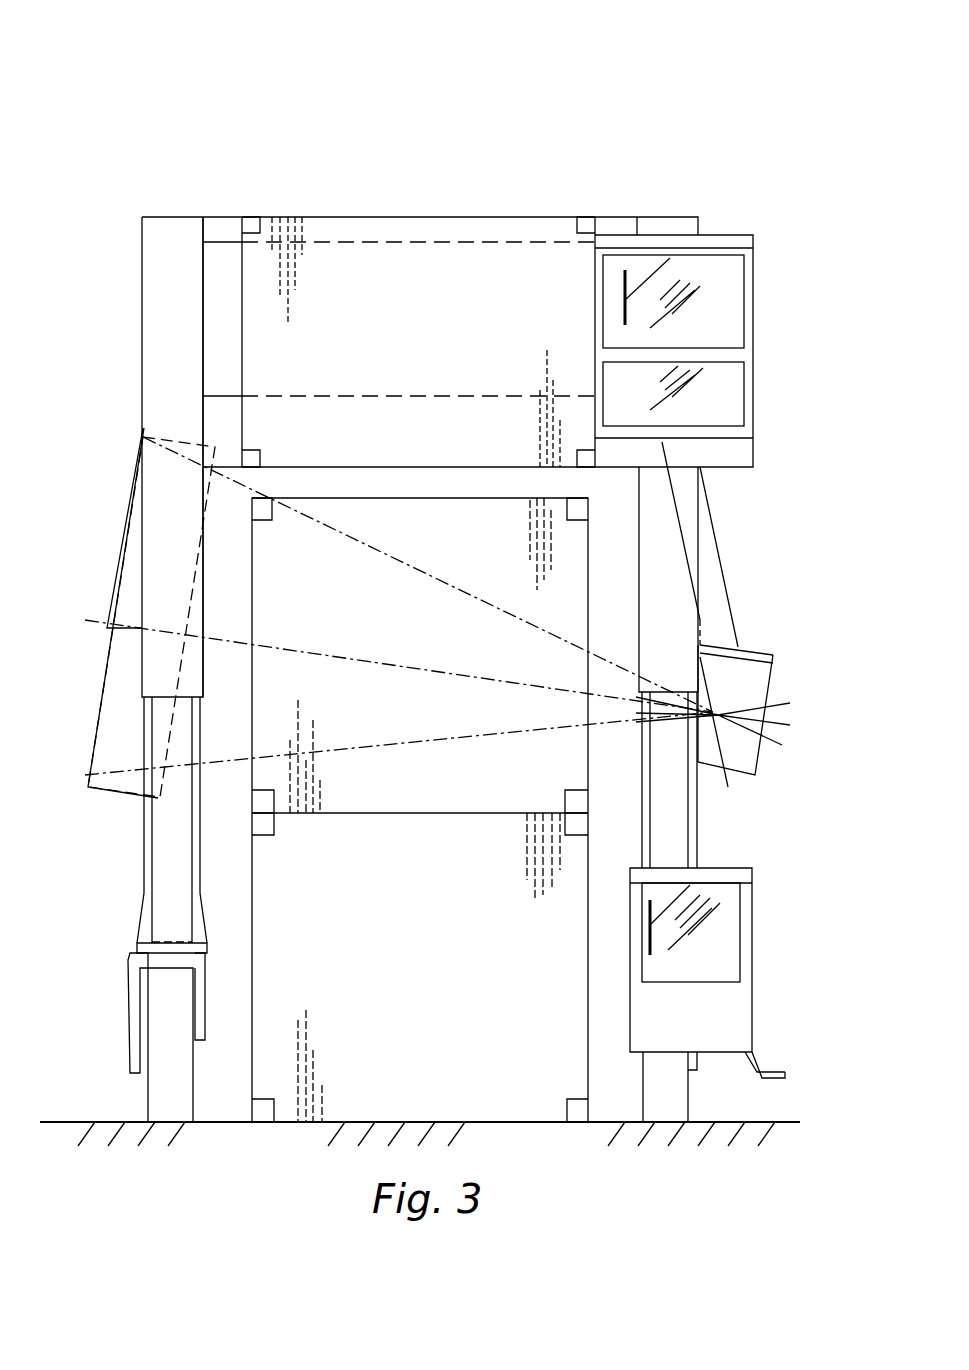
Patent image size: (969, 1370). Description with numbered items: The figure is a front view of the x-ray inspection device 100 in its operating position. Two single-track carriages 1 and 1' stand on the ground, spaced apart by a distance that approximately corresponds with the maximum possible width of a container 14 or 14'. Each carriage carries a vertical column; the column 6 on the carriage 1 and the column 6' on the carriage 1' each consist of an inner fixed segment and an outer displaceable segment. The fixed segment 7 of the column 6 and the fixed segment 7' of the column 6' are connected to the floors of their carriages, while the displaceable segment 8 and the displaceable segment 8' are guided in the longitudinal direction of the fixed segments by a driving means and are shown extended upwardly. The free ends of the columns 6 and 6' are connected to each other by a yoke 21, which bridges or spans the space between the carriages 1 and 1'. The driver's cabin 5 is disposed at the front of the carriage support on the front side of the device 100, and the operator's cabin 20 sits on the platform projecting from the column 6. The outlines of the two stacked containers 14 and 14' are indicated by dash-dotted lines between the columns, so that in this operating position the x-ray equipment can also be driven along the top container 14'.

The device 100 is at (475, 110).
The yoke 21 is at (366, 268).
The operator's cabin 20 is at (735, 383).
The vertical column 6 is at (619, 579).
The column 6' is at (260, 457).
The container 14 is at (416, 851).
The top container 14' is at (161, 617).
The outer displaceable segment 8 is at (724, 608).
The displaceable segment 8' is at (111, 528).
The inner fixed segment 7 is at (713, 780).
The fixed segment 7' is at (133, 690).
The driver's cabin 5 is at (740, 1005).
The single-track carriage 1 is at (714, 1118).
The carriage 1' is at (132, 1069).